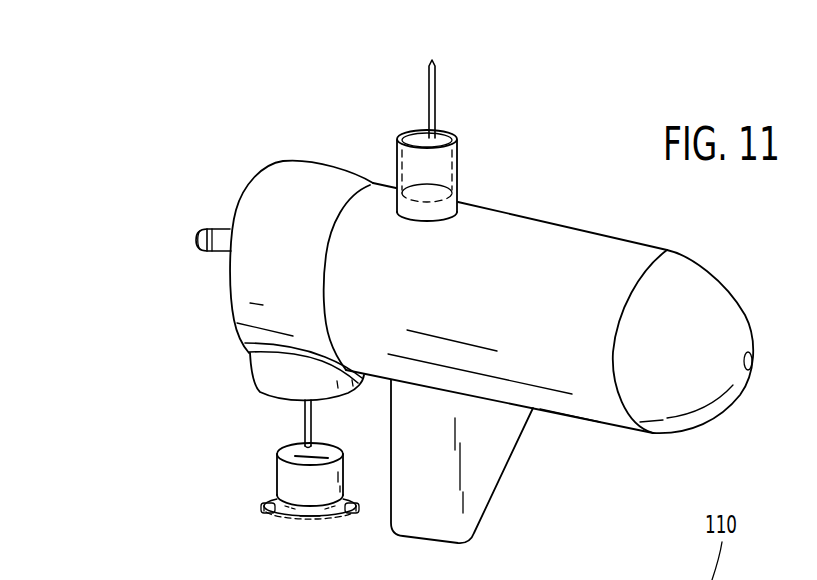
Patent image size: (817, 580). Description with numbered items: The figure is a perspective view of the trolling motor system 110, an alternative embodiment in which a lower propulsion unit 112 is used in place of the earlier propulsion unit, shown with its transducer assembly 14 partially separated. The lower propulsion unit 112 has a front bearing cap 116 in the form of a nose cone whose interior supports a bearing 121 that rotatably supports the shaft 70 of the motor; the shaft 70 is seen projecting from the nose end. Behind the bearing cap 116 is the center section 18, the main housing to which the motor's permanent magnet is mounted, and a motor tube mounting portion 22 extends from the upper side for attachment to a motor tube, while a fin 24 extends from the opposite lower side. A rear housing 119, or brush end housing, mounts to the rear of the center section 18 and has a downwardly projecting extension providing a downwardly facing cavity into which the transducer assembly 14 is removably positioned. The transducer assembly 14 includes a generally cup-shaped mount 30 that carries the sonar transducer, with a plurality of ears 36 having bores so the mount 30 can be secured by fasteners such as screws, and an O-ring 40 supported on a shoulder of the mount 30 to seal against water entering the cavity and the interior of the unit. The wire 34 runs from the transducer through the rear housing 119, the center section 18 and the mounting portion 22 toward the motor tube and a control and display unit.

The trolling motor system 110 is at (599, 152).
The lower propulsion unit 112 is at (517, 211).
The front bearing cap 116 is at (718, 272).
The rear housing 119 is at (297, 163).
The bearing 121 is at (251, 356).
The shaft 70 is at (212, 235).
The motor tube mounting portion 22 is at (459, 150).
The wire 34 is at (437, 91).
The center section 18 is at (562, 418).
The fin 24 is at (487, 515).
The transducer assembly 14 is at (268, 478).
The mount 30 is at (346, 475).
The ears 36 is at (268, 516).
The O-ring 40 is at (310, 509).